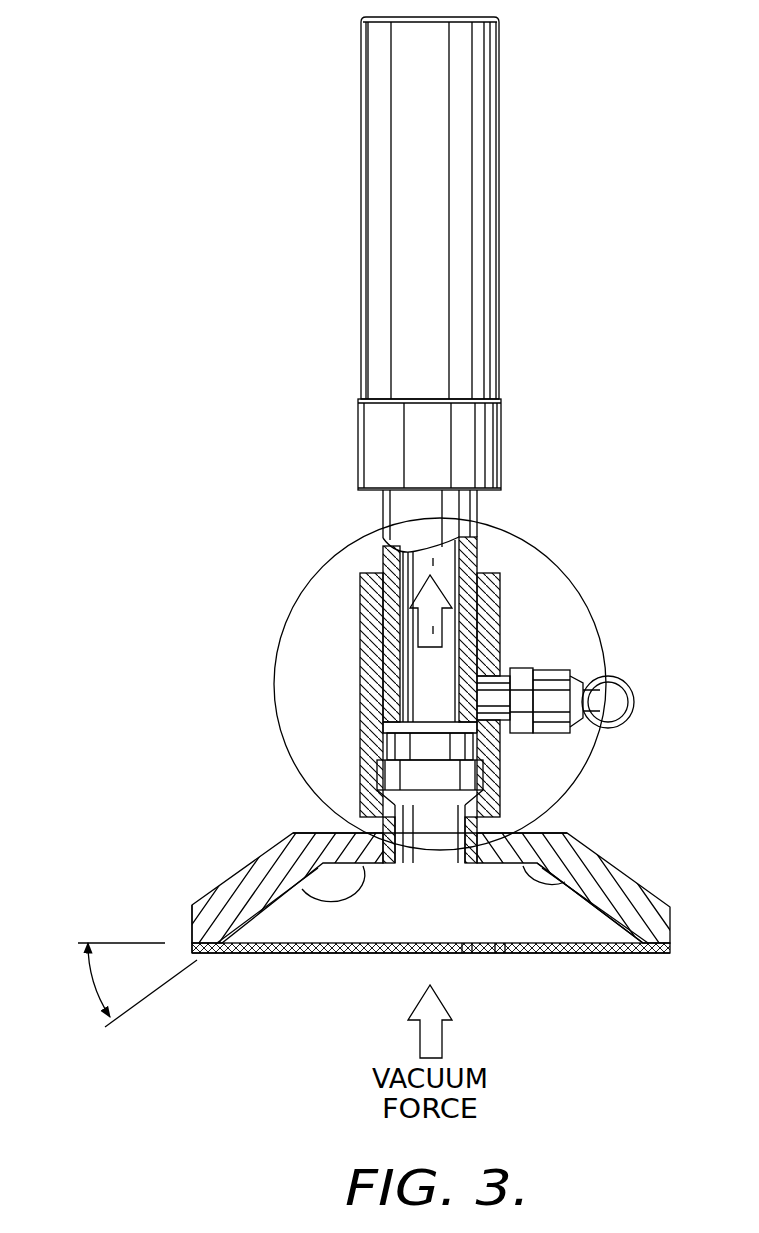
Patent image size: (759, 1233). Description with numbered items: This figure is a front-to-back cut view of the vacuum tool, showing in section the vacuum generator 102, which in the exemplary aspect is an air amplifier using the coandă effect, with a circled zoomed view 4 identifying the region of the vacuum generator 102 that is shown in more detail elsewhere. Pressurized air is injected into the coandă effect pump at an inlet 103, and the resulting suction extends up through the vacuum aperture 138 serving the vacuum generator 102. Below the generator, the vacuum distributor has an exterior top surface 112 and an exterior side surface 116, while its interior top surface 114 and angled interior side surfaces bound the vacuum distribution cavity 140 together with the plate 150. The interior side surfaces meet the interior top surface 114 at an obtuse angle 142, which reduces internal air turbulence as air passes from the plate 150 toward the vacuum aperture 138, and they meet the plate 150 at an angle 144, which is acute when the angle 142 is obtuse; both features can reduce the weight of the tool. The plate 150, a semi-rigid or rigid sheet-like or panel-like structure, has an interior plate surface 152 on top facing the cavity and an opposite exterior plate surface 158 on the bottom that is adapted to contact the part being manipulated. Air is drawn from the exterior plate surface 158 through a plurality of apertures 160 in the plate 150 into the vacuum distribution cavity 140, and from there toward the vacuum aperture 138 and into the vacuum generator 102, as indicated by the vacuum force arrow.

The zoomed view of the vacuum generator 4 is at (573, 577).
The vacuum generator 102 is at (392, 618).
The inlet 103 is at (621, 688).
The exterior top surface 112 is at (304, 830).
The interior top surface 114 is at (587, 847).
The exterior side surface 116 is at (232, 871).
The vacuum aperture 138 is at (443, 846).
The vacuum distribution cavity 140 is at (545, 915).
The obtuse angle 142 is at (343, 893).
The angle 144 is at (92, 986).
The vacuum plate 150 is at (187, 942).
The interior plate surface 152 is at (296, 935).
The exterior plate surface 158 is at (314, 956).
The plurality of apertures 160 is at (467, 956).